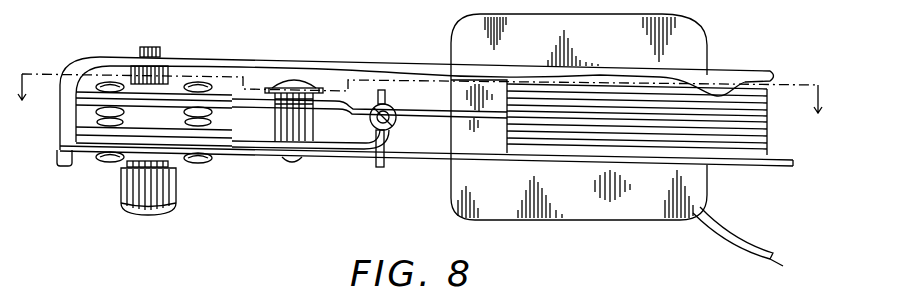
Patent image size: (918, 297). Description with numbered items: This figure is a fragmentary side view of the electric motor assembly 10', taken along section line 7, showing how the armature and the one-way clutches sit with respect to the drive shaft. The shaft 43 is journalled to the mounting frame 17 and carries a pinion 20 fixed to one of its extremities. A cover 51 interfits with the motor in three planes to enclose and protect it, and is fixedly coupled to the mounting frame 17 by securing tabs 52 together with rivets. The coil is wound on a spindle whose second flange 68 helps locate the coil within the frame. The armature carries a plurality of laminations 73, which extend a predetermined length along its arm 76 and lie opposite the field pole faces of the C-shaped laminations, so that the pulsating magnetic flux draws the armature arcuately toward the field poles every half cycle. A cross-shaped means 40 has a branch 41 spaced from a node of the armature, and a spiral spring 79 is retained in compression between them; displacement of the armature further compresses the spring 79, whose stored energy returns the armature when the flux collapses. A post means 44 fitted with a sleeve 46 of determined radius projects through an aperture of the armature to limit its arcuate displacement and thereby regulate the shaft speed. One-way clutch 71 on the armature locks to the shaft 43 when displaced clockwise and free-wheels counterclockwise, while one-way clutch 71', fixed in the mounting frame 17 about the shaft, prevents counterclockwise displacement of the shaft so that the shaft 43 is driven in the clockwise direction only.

The tape dispenser device 10' is at (418, 83).
The second flange 68 is at (467, 55).
The cover 51 is at (412, 68).
The laminations 73 is at (758, 107).
The mounting frame 17 is at (428, 156).
The shaft 43 is at (157, 53).
The one-way clutch 71 is at (157, 84).
The one-way clutch 71' is at (163, 142).
The sleeve 46 is at (279, 127).
The post means 44 is at (293, 158).
The cross-shaped means 40 is at (369, 101).
The arm 76 is at (352, 115).
The branch 41 is at (388, 107).
The spiral spring 79 is at (391, 119).
The securing tabs 52 is at (70, 164).
The pinion 20 is at (164, 181).
The section line 7- 7 is at (418, 108).